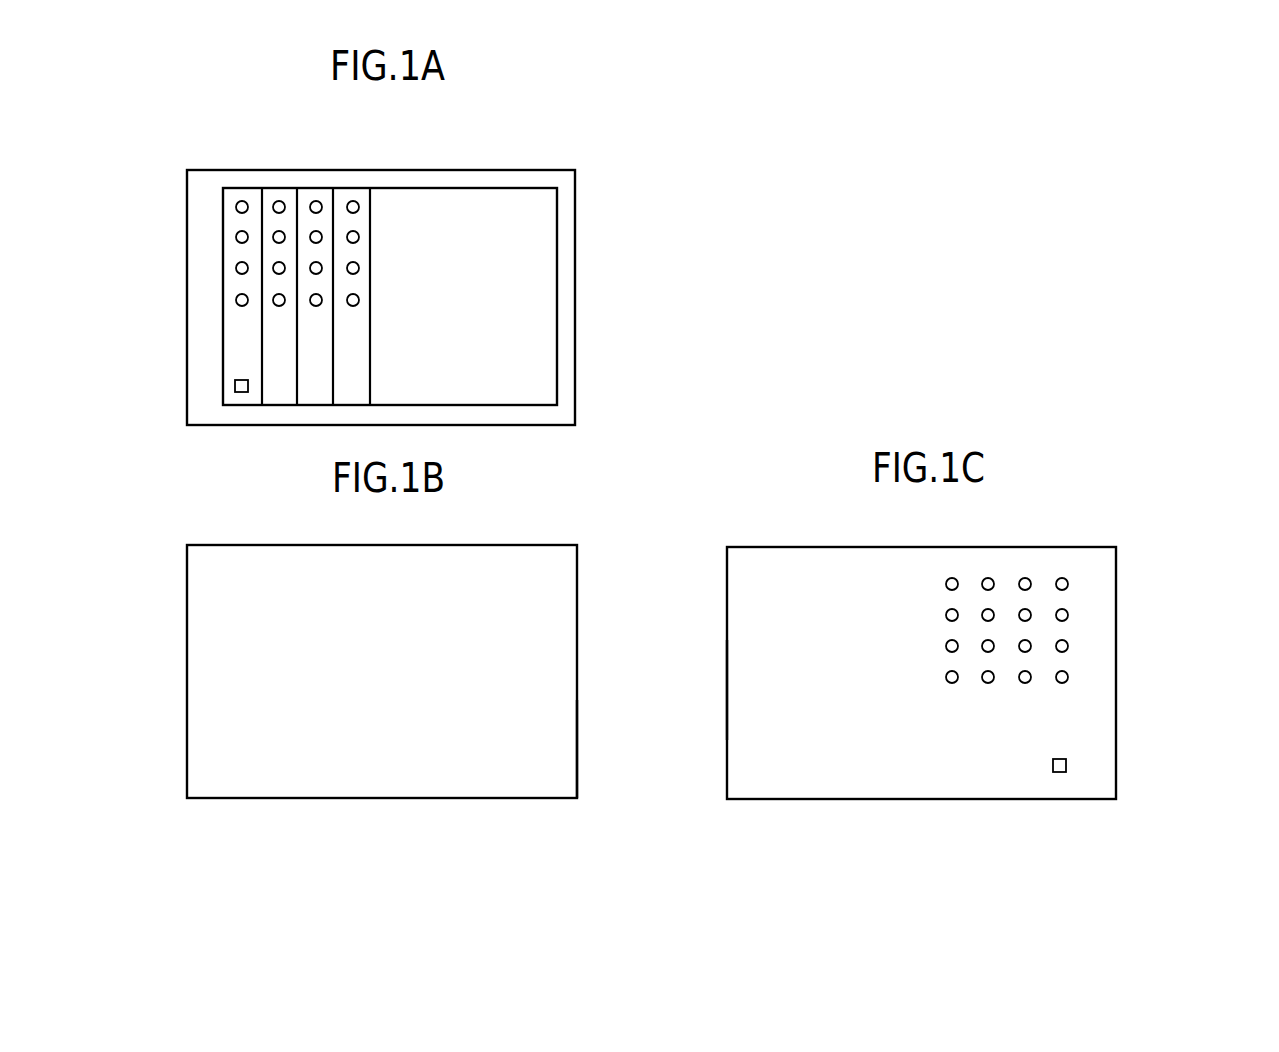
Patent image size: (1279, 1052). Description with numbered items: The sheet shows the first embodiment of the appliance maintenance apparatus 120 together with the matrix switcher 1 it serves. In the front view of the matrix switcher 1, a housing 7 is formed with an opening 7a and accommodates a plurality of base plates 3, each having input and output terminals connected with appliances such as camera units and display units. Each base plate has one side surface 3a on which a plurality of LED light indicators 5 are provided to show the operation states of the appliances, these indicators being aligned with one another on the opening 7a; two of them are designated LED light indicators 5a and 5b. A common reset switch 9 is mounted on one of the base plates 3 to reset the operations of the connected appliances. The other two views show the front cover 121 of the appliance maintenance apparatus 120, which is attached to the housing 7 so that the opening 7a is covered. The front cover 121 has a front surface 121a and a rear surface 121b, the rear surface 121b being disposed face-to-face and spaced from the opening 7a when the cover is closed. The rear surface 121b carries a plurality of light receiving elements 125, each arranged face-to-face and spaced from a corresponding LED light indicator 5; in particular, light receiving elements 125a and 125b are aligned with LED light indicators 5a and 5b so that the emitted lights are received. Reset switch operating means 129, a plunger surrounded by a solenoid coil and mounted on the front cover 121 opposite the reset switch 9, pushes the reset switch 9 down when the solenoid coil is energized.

In FIG. 1A, the matrix switcher 1 is at (597, 270).
In FIG. 1A, the base plates 3 is at (279, 322).
In FIG. 1A, the one side surface 3a is at (316, 200).
In FIG. 1A, the LED light indicators 5 is at (321, 202).
In FIG. 1A, the LED light indicator 5a is at (236, 208).
In FIG. 1A, the LED light indicator 5b is at (236, 238).
In FIG. 1A, the housing 7 is at (568, 212).
In FIG. 1A, the opening 7a is at (568, 408).
In FIG. 1A, the reset switch 9 is at (233, 387).
In FIG. 1B, the appliance maintenance apparatus 120 is at (149, 583).
In FIG. 1C, the appliance maintenance apparatus 120 is at (1153, 502).
In FIG. 1B, the front cover 121 is at (408, 785).
In FIG. 1C, the front cover 121 is at (890, 790).
In FIG. 1B, the front surface 121a is at (552, 745).
In FIG. 1C, the rear surface 121b is at (745, 704).
In FIG. 1C, the light receiving elements 125 is at (985, 578).
In FIG. 1C, the light receiving element 125a is at (1068, 584).
In FIG. 1C, the light receiving element 125b is at (1068, 615).
In FIG. 1C, the reset switch operating means 129 is at (1067, 760).